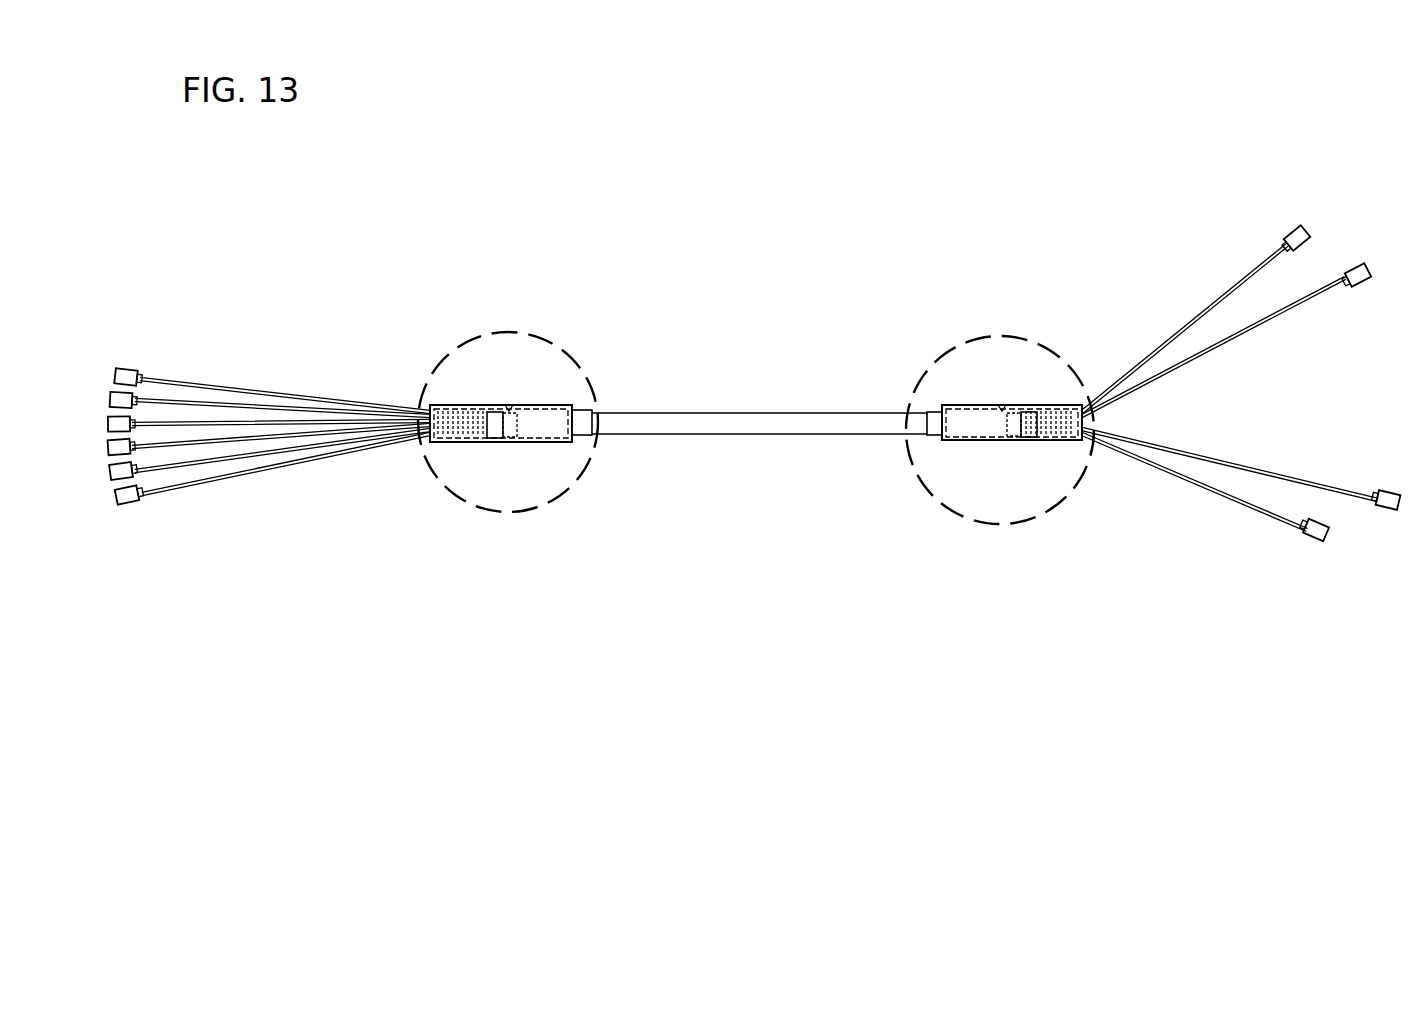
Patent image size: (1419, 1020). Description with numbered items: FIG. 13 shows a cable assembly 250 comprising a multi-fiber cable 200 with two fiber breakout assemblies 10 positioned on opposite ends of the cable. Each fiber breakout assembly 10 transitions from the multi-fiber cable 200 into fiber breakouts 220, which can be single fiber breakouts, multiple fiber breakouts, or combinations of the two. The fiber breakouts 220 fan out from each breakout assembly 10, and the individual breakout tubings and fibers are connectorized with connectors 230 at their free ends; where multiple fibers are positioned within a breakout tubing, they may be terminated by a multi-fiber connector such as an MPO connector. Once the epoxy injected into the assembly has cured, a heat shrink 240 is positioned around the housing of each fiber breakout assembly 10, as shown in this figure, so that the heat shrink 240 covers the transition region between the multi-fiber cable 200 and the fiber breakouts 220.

The fiber breakout assembly 10 is at (477, 482).
The multi-fiber cable 200 is at (793, 435).
The fiber breakouts 220 is at (245, 393).
The connectors 230 is at (130, 370).
The heat shrink 240 is at (538, 442).
The cable assembly 250 is at (769, 362).